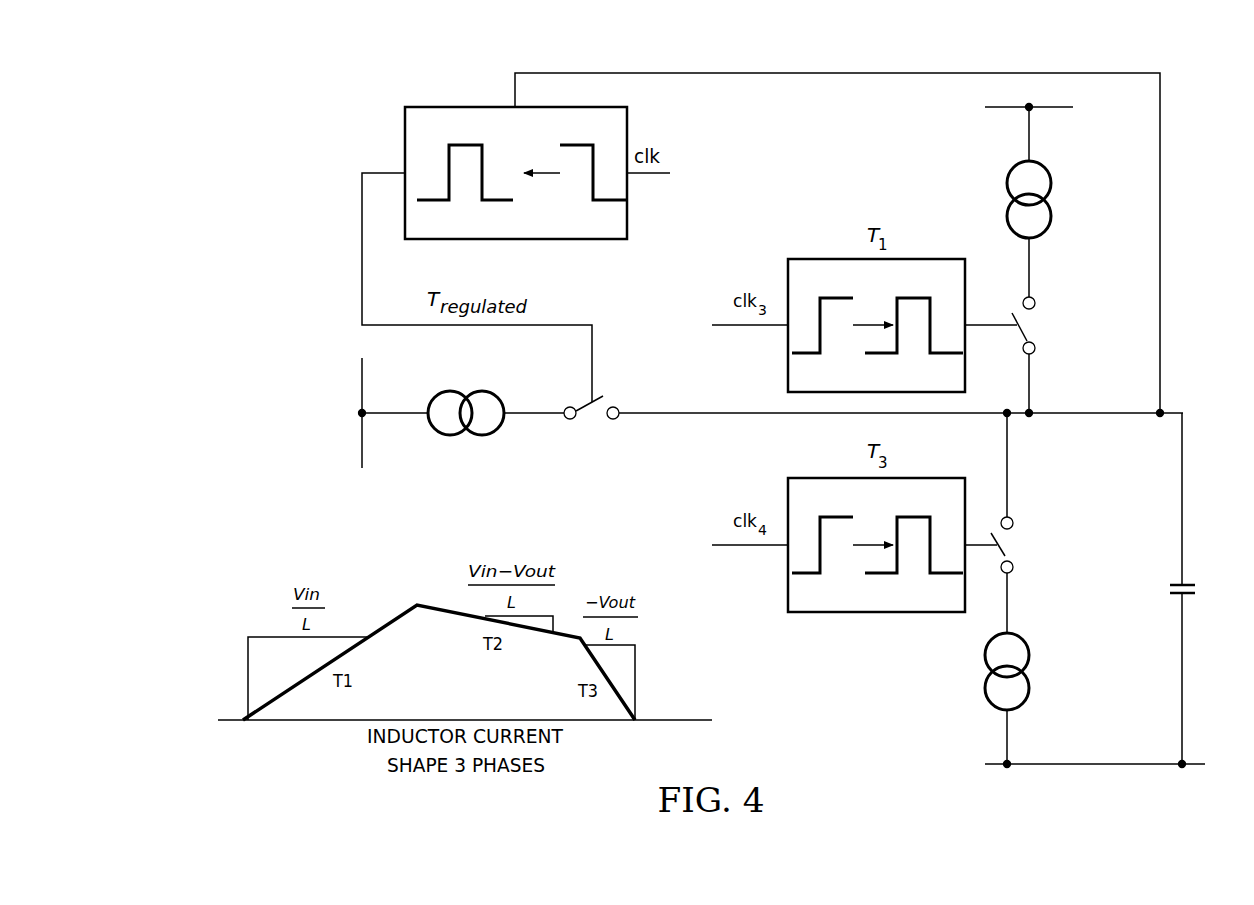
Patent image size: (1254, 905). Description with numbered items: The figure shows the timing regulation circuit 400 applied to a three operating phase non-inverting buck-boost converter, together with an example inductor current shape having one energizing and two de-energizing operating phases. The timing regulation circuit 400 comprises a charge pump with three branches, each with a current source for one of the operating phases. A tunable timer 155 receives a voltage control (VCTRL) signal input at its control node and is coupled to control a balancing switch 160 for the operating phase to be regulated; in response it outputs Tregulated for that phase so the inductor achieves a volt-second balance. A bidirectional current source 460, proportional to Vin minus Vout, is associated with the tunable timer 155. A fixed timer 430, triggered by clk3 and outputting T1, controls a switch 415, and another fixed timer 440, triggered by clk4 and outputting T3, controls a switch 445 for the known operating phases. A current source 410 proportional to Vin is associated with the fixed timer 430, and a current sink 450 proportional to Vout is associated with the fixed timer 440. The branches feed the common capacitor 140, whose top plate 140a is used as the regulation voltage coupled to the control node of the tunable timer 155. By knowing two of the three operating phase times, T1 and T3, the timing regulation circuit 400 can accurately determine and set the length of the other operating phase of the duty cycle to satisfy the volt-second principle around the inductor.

The timing regulation circuit 400 is at (162, 70).
The tunable timer 155 is at (455, 102).
The balancing switch 160 is at (583, 408).
The bidirectional current source 460 is at (450, 436).
The fixed timer 430 is at (922, 255).
The fixed timer 440 is at (889, 618).
The current source 410 is at (1007, 185).
The switch 415 is at (1033, 333).
The switch 445 is at (1010, 550).
The current sink 450 is at (984, 688).
The common capacitor 140 is at (1181, 588).
The top plate 140a is at (1170, 582).